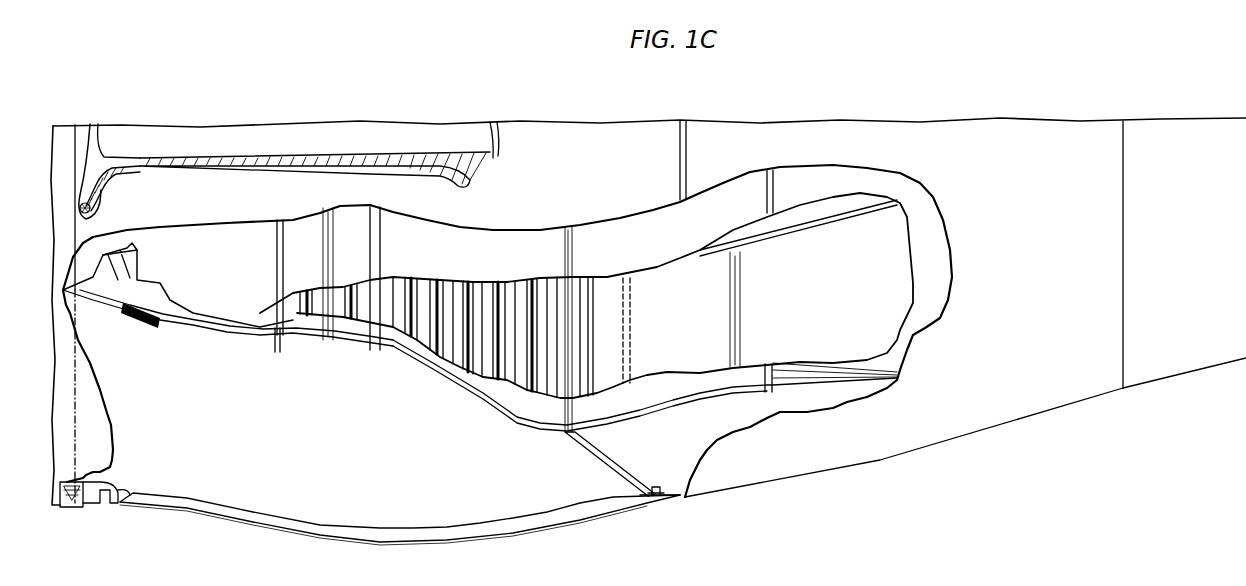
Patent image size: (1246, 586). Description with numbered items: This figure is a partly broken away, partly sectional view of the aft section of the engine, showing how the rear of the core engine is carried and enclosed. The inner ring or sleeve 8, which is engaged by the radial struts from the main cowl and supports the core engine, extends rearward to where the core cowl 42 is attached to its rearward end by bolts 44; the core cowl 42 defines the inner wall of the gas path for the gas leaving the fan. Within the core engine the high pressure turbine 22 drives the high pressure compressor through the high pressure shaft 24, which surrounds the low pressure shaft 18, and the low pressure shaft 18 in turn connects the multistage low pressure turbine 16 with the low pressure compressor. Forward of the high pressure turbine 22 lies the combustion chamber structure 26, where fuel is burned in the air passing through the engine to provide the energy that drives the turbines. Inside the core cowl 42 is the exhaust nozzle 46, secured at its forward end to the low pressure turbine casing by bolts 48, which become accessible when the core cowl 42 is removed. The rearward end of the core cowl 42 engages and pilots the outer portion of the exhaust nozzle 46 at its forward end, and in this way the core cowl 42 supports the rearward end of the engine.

The inner ring or sleeve 8 is at (66, 500).
The multistage low pressure turbine 16 is at (525, 401).
The low pressure shaft 18 is at (183, 162).
The high pressure turbine 22 is at (347, 329).
The high pressure shaft 24 is at (137, 172).
The combustion chamber structure 26 is at (205, 331).
The core cowl 42 is at (173, 512).
The bolts 44 is at (93, 503).
The exhaust nozzle 46 is at (718, 490).
The bolts 48 is at (563, 427).